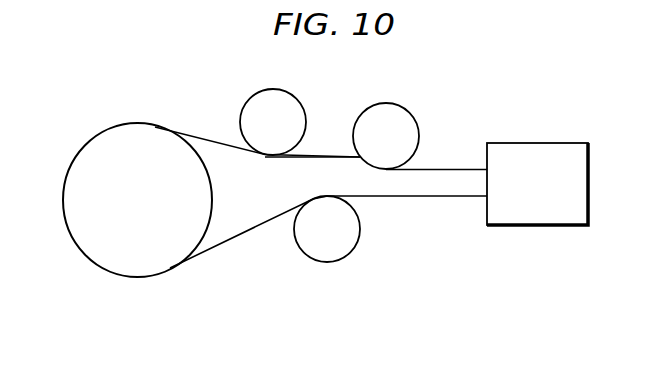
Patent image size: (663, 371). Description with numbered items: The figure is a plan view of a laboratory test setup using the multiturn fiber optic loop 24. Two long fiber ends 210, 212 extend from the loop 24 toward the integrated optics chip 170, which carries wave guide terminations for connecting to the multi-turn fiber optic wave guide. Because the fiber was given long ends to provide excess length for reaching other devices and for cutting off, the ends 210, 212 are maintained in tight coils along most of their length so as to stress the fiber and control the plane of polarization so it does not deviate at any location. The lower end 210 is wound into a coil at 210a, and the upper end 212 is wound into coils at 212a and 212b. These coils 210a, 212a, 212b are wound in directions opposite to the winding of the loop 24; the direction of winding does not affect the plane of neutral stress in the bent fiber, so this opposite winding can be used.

The loop 24 is at (96, 142).
The integrated optics chip 170 is at (548, 197).
The long end 210 is at (208, 248).
The loop of long end 210a is at (353, 248).
The long end 212 is at (314, 156).
The loop of long end 212a is at (257, 99).
The loop of long end 212b is at (403, 113).